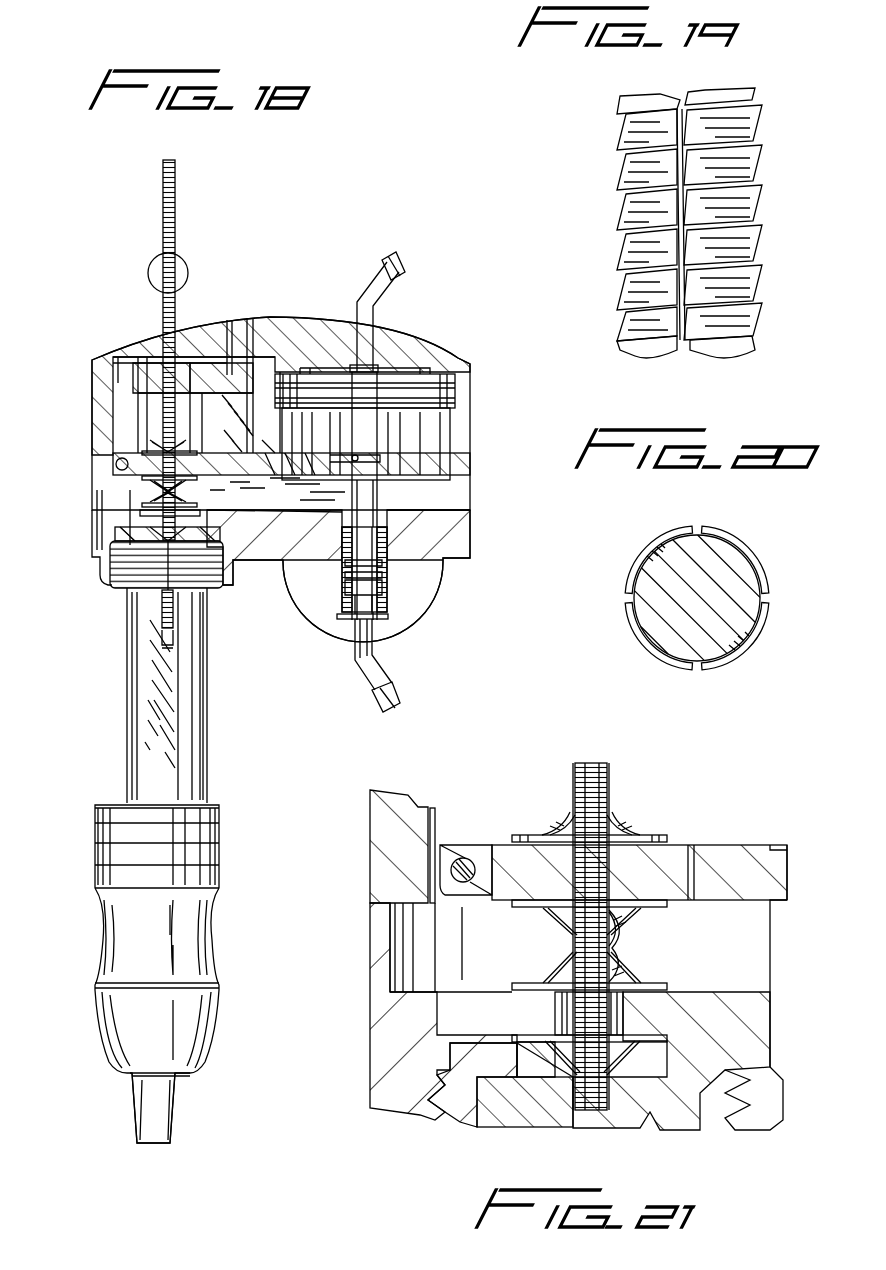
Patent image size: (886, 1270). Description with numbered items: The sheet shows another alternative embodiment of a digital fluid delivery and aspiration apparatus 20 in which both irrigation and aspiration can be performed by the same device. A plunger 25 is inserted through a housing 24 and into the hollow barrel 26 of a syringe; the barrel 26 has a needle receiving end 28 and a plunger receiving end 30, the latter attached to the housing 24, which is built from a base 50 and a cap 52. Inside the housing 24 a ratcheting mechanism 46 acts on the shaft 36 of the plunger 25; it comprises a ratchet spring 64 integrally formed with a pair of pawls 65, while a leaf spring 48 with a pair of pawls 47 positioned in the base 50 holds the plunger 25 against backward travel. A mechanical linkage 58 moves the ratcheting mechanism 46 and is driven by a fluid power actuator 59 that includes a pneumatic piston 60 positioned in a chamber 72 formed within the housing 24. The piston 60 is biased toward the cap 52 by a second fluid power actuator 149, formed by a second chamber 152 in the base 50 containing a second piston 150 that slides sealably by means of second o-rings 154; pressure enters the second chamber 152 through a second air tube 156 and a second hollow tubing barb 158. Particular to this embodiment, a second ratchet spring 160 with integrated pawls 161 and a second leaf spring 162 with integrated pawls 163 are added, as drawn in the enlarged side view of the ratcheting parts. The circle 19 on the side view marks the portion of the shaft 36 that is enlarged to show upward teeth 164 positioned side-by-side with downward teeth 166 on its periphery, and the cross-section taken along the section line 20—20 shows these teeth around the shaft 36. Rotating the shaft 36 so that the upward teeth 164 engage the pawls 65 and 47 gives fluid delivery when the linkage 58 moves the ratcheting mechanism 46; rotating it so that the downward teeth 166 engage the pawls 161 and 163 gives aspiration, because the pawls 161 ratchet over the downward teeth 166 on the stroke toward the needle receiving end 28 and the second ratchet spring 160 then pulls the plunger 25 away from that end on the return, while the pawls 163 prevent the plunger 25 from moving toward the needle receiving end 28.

In FIG. 18, the housing 24 is at (313, 322).
In FIG. 18, the plunger 25 is at (178, 180).
In FIG. 18, the hollow barrel 26 is at (145, 652).
In FIG. 21, the hollow barrel 26 is at (525, 1115).
In FIG. 18, the needle receiving end 28 is at (175, 1124).
In FIG. 18, the plunger receiving end 30 is at (135, 578).
In FIG. 18, the shaft 36 is at (178, 222).
In FIG. 20, the shaft 36 is at (728, 590).
In FIG. 21, the shaft 36 is at (585, 760).
In FIG. 18, the ratcheting mechanism 46 is at (112, 460).
In FIG. 21, the ratcheting mechanism 46 is at (700, 870).
In FIG. 21, the pawls 47 is at (620, 1055).
In FIG. 18, the leaf spring 48 is at (112, 556).
In FIG. 21, the leaf spring 48 is at (620, 1048).
In FIG. 18, the base 50 is at (447, 540).
In FIG. 21, the base 50 is at (385, 1010).
In FIG. 18, the cap 52 is at (430, 355).
In FIG. 21, the cap 52 is at (385, 825).
In FIG. 18, the mechanical linkage 58 is at (272, 468).
In FIG. 18, the fluid power actuator 59 is at (393, 370).
In FIG. 18, the pneumatic piston 60 is at (455, 388).
In FIG. 18, the ratchet spring 64 is at (150, 484).
In FIG. 21, the ratchet spring 64 is at (612, 930).
In FIG. 21, the pawls 65 is at (612, 950).
In FIG. 18, the chamber 72 is at (440, 440).
In FIG. 18, the second fluid power actuator 149 is at (385, 596).
In FIG. 18, the second piston 150 is at (380, 636).
In FIG. 18, the second chamber 152 is at (374, 556).
In FIG. 18, the second o-rings 154 is at (342, 580).
In FIG. 18, the second air tube 156 is at (352, 663).
In FIG. 18, the second hollow tubing barb 158 is at (382, 710).
In FIG. 18, the second ratchet spring 160 is at (165, 452).
In FIG. 21, the second ratchet spring 160 is at (640, 837).
In FIG. 21, the integrated pawls 161 is at (560, 822).
In FIG. 18, the second leaf spring 162 is at (145, 506).
In FIG. 21, the second leaf spring 162 is at (660, 990).
In FIG. 21, the integrated pawls 163 is at (560, 968).
In FIG. 19, the upward teeth 164 is at (745, 168).
In FIG. 20, the upward teeth 164 is at (745, 541).
In FIG. 21, the upward teeth 164 is at (603, 773).
In FIG. 19, the downward teeth 166 is at (622, 165).
In FIG. 20, the downward teeth 166 is at (648, 552).
In FIG. 21, the downward teeth 166 is at (578, 776).
In FIG. 18, the circle 19 is at (181, 270).
In FIG. 19, the digital fluid delivery and aspiration apparatus 20 is at (801, 272).